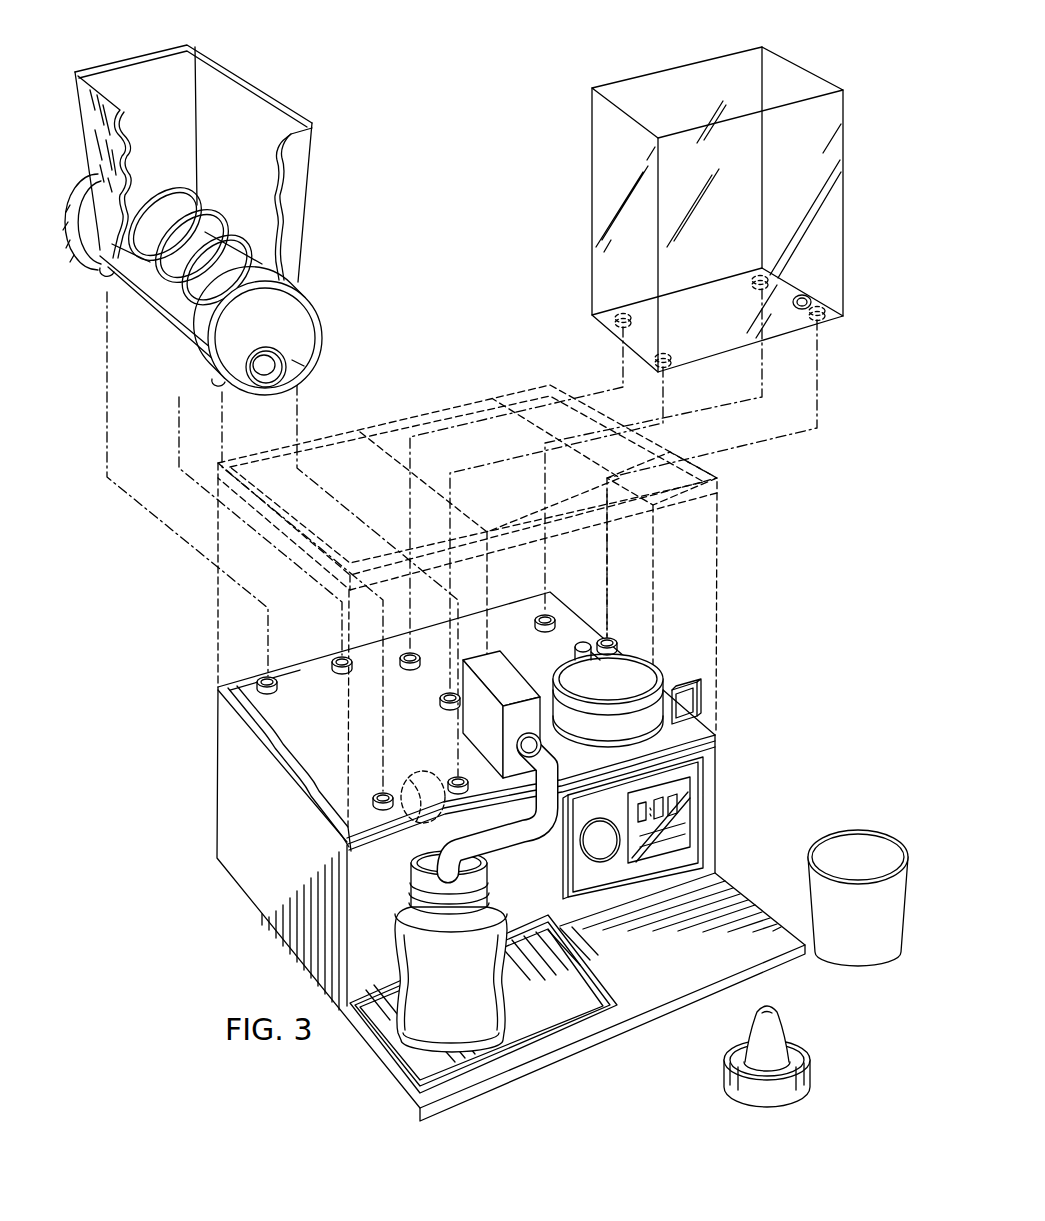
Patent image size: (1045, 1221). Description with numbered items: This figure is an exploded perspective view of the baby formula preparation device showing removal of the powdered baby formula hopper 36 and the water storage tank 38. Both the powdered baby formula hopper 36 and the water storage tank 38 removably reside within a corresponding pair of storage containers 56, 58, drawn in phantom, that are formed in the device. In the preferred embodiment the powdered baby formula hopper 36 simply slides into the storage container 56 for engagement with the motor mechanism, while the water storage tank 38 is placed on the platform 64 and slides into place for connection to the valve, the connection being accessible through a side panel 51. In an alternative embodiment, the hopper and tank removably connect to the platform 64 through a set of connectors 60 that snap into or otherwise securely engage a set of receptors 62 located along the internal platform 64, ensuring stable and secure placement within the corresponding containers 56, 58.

The powdered baby formula hopper 36 is at (157, 68).
The water storage tank 38 is at (722, 63).
The side panel 51 is at (683, 627).
The storage container 56 is at (283, 523).
The storage container 58 is at (487, 400).
The connectors 60 is at (102, 273).
The receptors 62 is at (258, 686).
The platform 64 is at (322, 726).